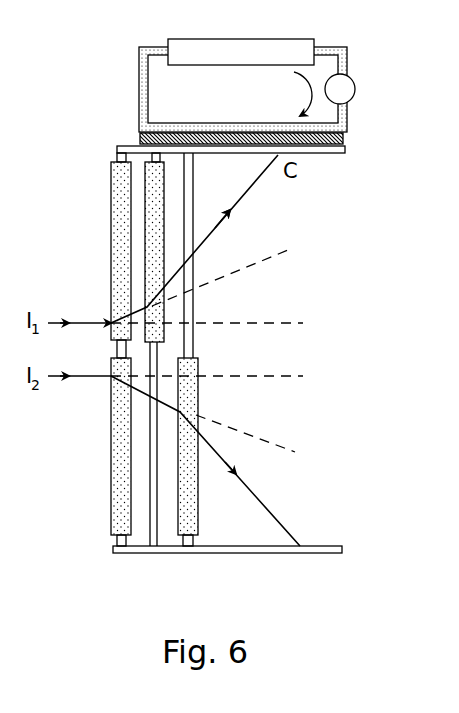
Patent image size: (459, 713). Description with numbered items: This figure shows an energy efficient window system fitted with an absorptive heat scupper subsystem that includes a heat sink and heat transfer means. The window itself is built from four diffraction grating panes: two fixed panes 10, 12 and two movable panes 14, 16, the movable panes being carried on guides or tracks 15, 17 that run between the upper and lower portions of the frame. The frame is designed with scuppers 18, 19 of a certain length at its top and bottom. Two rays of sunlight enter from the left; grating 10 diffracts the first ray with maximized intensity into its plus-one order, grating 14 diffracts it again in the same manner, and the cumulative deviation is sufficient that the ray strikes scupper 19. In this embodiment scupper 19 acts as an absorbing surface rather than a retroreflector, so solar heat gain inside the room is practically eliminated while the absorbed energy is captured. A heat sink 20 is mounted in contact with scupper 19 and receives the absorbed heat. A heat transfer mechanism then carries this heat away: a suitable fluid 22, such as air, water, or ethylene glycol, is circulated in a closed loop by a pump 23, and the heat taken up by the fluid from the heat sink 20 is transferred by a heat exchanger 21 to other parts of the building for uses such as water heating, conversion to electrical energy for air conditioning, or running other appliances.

The fixed diffraction grating windowpane 10 is at (112, 200).
The fixed diffraction grating windowpane 12 is at (112, 486).
The movable diffraction grating windowpane 14 is at (148, 220).
The guide or track 15 is at (160, 531).
The movable diffraction grating windowpane 16 is at (198, 493).
The guide or track 17 is at (195, 222).
The scupper 18 is at (320, 555).
The scupper 19 is at (336, 155).
The heat sink 20 is at (346, 141).
The heat exchanger 21 is at (302, 40).
The fluid 22 is at (345, 61).
The pump 23 is at (356, 84).